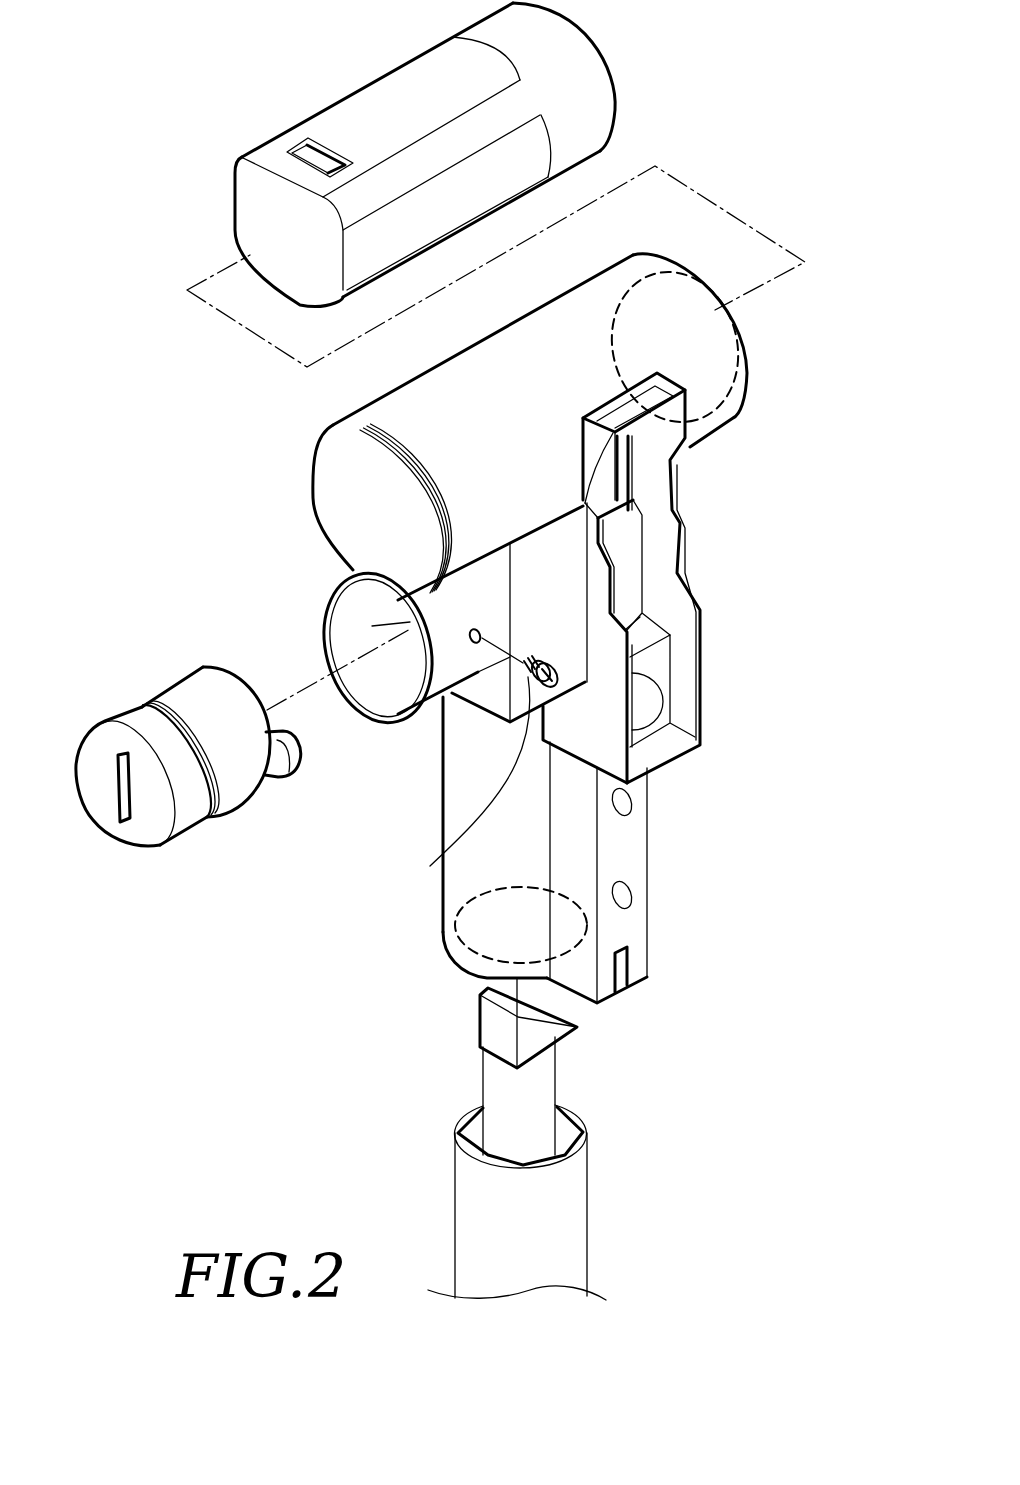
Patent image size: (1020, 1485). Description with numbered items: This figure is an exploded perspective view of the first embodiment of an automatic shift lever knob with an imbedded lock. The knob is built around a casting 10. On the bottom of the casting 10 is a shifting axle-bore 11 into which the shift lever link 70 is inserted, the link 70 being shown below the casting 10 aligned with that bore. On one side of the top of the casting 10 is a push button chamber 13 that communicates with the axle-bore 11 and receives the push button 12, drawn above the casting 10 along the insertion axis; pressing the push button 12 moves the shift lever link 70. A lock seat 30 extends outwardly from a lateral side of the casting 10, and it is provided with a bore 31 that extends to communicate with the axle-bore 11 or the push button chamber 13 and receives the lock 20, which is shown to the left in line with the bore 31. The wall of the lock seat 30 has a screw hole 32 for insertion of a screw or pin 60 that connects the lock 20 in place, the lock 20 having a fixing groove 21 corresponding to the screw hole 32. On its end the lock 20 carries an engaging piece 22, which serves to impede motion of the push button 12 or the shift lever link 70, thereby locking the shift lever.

The casting 10 is at (340, 468).
The shifting axle-bore 11 is at (488, 958).
The push button 12 is at (577, 70).
The push button chamber 13 is at (733, 352).
The lock 20 is at (148, 836).
The fixing groove 21 is at (217, 793).
The engaging piece 22 is at (290, 778).
The lock seat 30 is at (340, 576).
The bore 31 is at (367, 627).
The screw hole 32 is at (481, 643).
The screw or pin 60 is at (477, 765).
The shift lever link 70 is at (543, 1128).